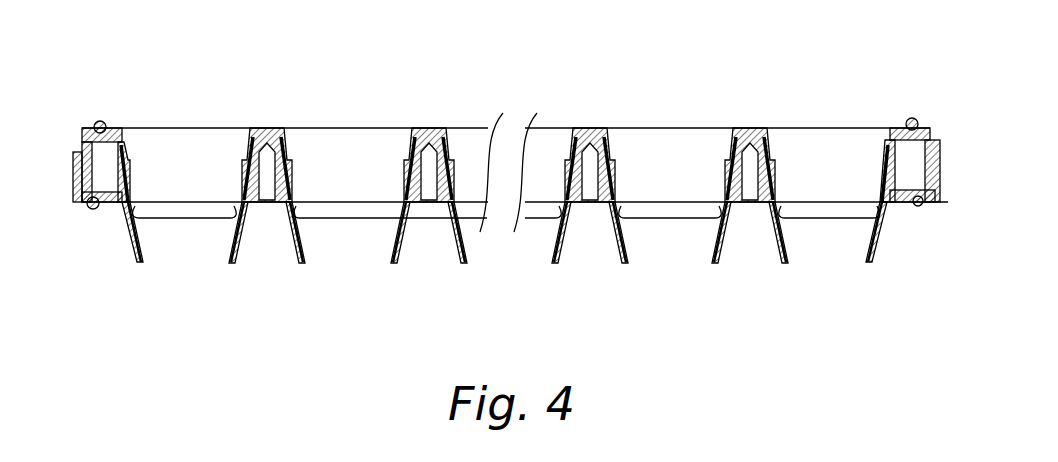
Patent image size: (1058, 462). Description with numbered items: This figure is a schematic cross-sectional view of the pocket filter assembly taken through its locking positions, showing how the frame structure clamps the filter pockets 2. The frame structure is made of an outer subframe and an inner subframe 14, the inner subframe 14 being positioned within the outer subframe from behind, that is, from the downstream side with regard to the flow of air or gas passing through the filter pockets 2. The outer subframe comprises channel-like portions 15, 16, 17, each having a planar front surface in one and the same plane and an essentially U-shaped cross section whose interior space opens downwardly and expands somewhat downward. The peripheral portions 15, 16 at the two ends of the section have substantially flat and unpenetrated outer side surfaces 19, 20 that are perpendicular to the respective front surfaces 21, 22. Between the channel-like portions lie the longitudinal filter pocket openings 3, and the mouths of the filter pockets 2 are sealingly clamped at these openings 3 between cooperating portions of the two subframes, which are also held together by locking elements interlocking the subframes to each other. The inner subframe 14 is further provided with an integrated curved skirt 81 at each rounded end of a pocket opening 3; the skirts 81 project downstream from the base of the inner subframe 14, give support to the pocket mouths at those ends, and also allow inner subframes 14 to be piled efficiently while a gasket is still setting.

The filter pockets 2 is at (227, 254).
The filter pocket openings 3 is at (205, 148).
The inner subframe 14 is at (112, 208).
The channel-like portion of outer subframe 15 is at (114, 126).
The channel-like portion of outer subframe 16 is at (938, 138).
The channel-like portion of outer subframe 17 is at (448, 124).
The outer side surface 19 is at (74, 168).
The outer side surface 20 is at (941, 172).
The front surface 21 is at (88, 121).
The front surface 22 is at (906, 122).
The curved skirt 81 is at (347, 220).